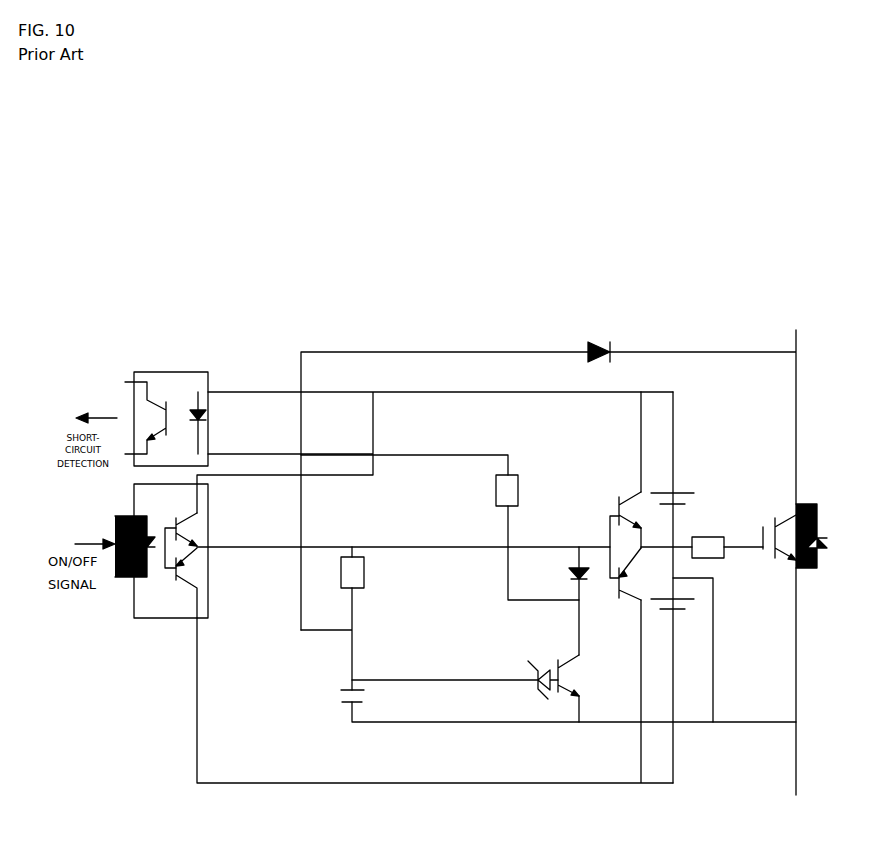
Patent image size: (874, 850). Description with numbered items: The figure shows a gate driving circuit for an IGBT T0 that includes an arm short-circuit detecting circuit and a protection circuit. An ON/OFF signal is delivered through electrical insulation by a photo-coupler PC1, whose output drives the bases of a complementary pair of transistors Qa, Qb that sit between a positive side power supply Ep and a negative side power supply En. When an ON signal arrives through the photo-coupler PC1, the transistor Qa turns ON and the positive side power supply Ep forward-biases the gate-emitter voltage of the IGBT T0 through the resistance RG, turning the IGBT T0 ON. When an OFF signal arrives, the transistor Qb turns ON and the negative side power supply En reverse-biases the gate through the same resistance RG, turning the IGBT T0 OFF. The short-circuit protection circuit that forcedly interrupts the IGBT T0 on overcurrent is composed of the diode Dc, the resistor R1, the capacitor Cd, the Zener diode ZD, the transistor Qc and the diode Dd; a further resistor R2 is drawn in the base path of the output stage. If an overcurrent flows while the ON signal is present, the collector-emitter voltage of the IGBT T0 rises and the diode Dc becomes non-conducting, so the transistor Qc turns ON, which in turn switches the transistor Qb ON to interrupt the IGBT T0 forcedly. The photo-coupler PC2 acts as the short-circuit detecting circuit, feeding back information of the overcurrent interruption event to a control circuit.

The photo-coupler PC1 is at (161, 562).
The photo-coupler PC2 is at (166, 409).
The resistor R1 is at (365, 567).
The resistor R2 is at (521, 490).
The capacitor Cd is at (343, 689).
The Zener diode ZD is at (533, 688).
The transistor Qc is at (581, 675).
The diode Dd is at (567, 575).
The diode Dc is at (600, 341).
The transistor Qa is at (627, 499).
The transistor Qb is at (626, 583).
The positive side power supply Ep is at (674, 488).
The negative side power supply En is at (675, 616).
The resistance RG is at (708, 537).
The IGBT T0 is at (795, 528).